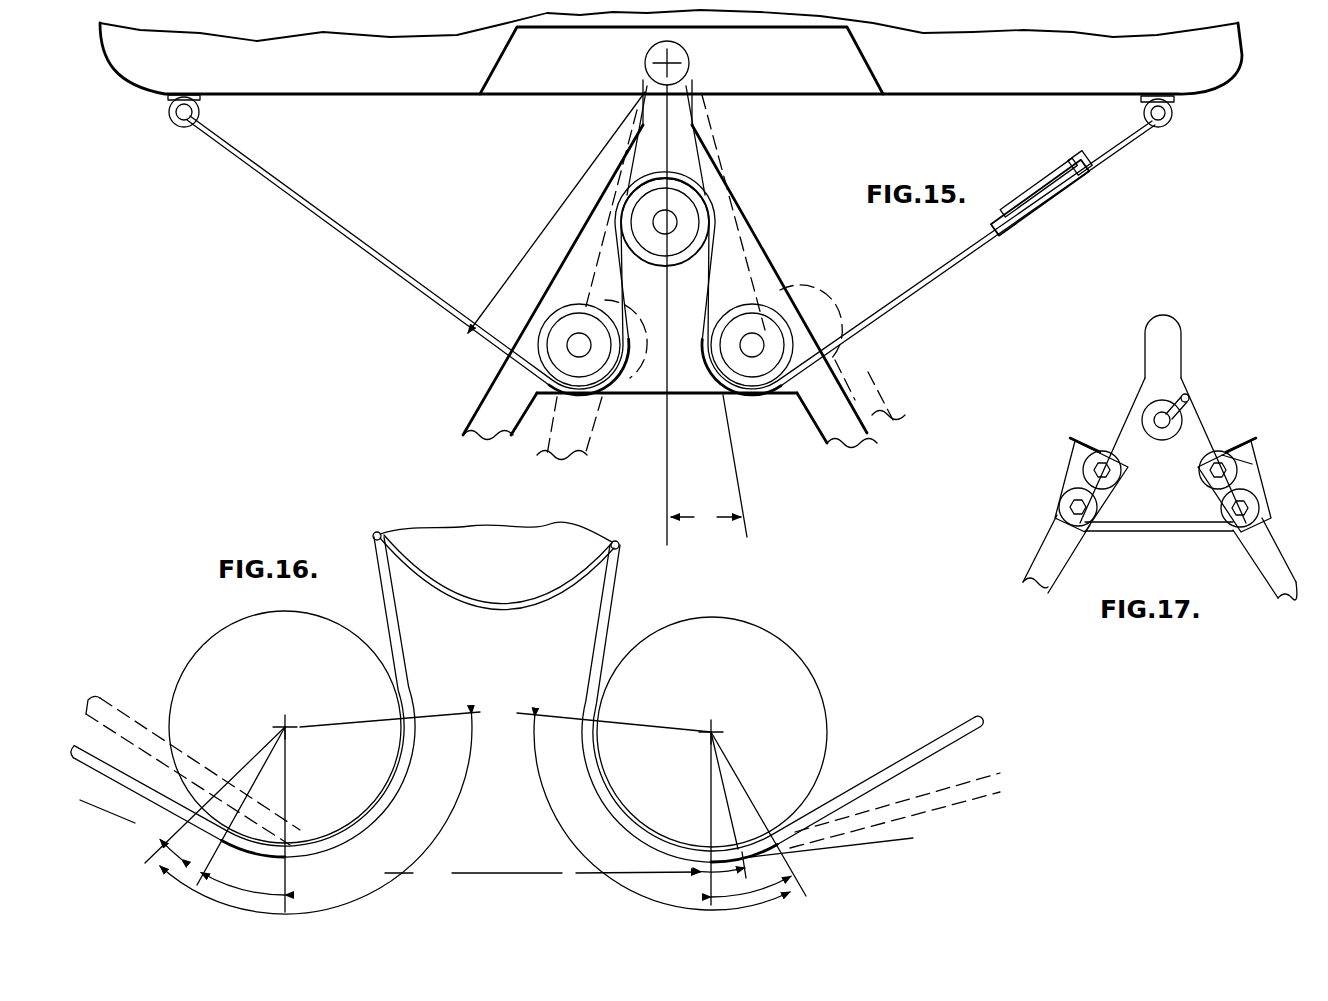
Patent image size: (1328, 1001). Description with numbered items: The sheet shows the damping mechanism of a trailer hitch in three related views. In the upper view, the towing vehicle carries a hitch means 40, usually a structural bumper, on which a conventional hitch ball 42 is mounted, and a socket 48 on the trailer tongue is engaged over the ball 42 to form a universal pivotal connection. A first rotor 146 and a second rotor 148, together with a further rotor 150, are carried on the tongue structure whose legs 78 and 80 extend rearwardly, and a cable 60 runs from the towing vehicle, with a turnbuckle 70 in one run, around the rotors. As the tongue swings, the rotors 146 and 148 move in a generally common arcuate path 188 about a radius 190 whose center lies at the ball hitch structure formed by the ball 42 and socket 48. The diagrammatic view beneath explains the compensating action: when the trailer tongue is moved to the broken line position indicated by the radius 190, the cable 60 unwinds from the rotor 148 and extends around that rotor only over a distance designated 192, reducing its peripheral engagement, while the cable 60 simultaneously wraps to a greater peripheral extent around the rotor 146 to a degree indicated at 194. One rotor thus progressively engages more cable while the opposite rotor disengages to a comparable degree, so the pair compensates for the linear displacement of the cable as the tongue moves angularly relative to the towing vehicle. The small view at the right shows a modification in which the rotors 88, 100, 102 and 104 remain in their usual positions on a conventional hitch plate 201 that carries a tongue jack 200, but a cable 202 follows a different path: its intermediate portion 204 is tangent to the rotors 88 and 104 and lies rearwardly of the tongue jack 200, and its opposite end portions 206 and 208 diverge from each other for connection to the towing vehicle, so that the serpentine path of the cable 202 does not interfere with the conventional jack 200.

In FIG. 15, the hitch means 40 is at (965, 69).
In FIG. 15, the hitch ball 42 is at (690, 73).
In FIG. 15, the socket 48 is at (644, 64).
In FIG. 15, the cable 60 is at (950, 266).
In FIG. 16, the cable 60 is at (909, 766).
In FIG. 15, the turnbuckle 70 is at (1048, 202).
In FIG. 15, the left frame leg 78 is at (468, 417).
In FIG. 15, the right frame leg 80 is at (846, 438).
In FIG. 15, the first rotor 146 is at (537, 347).
In FIG. 16, the first rotor 146 is at (216, 636).
In FIG. 15, the second rotor 148 is at (812, 302).
In FIG. 16, the second rotor 148 is at (690, 621).
In FIG. 15, the upper roller 150 is at (710, 218).
In FIG. 15, the arcuate path 188 is at (704, 406).
In FIG. 16, the arcuate path 188 is at (491, 873).
In FIG. 15, the radius 190 is at (472, 248).
In FIG. 16, the unwound distance 192 is at (586, 872).
In FIG. 16, the wrap degree 194 is at (412, 872).
In FIG. 17, the rotor 88 is at (1065, 507).
In FIG. 17, the rotor 100 is at (1086, 462).
In FIG. 17, the rotor 102 is at (1233, 473).
In FIG. 17, the rotor 104 is at (1242, 522).
In FIG. 17, the tongue jack 200 is at (1182, 418).
In FIG. 17, the hitch plate 201 is at (1163, 394).
In FIG. 17, the cable 202 is at (1247, 445).
In FIG. 17, the intermediate portion 204 is at (1152, 532).
In FIG. 17, the end portion 206 is at (1248, 464).
In FIG. 17, the end portion 208 is at (1090, 439).